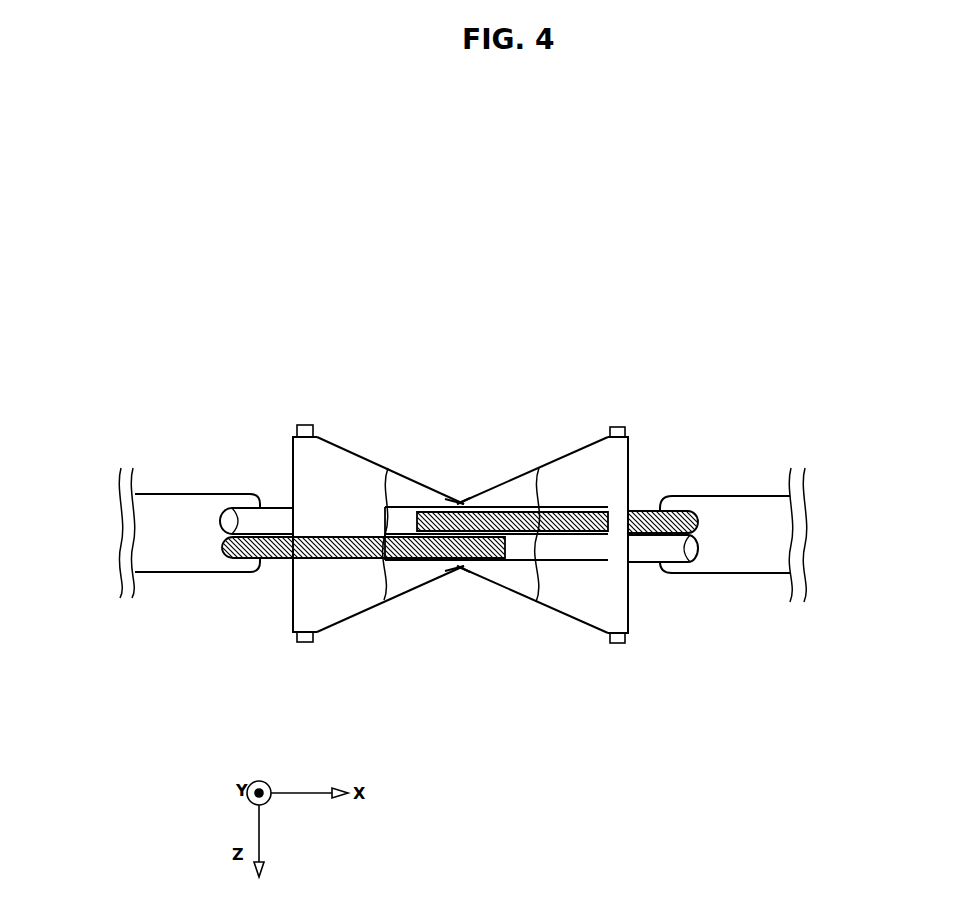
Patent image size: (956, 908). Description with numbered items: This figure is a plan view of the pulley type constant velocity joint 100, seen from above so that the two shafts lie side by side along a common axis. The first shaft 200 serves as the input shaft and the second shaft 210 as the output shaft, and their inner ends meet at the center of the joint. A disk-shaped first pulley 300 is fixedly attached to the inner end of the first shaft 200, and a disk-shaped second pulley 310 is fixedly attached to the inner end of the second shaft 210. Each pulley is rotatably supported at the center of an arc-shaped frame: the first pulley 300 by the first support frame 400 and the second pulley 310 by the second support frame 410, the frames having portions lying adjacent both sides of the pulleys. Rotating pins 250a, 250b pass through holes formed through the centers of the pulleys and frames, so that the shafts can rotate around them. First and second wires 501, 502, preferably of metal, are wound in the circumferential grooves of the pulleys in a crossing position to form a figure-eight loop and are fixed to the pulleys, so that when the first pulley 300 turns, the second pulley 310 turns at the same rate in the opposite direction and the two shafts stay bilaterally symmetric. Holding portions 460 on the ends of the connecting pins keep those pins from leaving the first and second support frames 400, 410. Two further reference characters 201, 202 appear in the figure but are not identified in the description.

The pulley type constant velocity joint 100 is at (462, 413).
The first shaft 200 is at (177, 560).
The first connecting rod 201 is at (258, 505).
The second connecting rod 202 is at (663, 507).
The second shaft 210 is at (762, 560).
The rotating pin 250a is at (307, 423).
The rotating pin 250b is at (617, 425).
The first pulley 300 is at (282, 513).
The second pulley 310 is at (650, 553).
The first support frame 400 is at (337, 603).
The second support frame 410 is at (583, 603).
The holding portions 460 is at (462, 570).
The first wire 501 is at (650, 508).
The second wire 502 is at (273, 557).